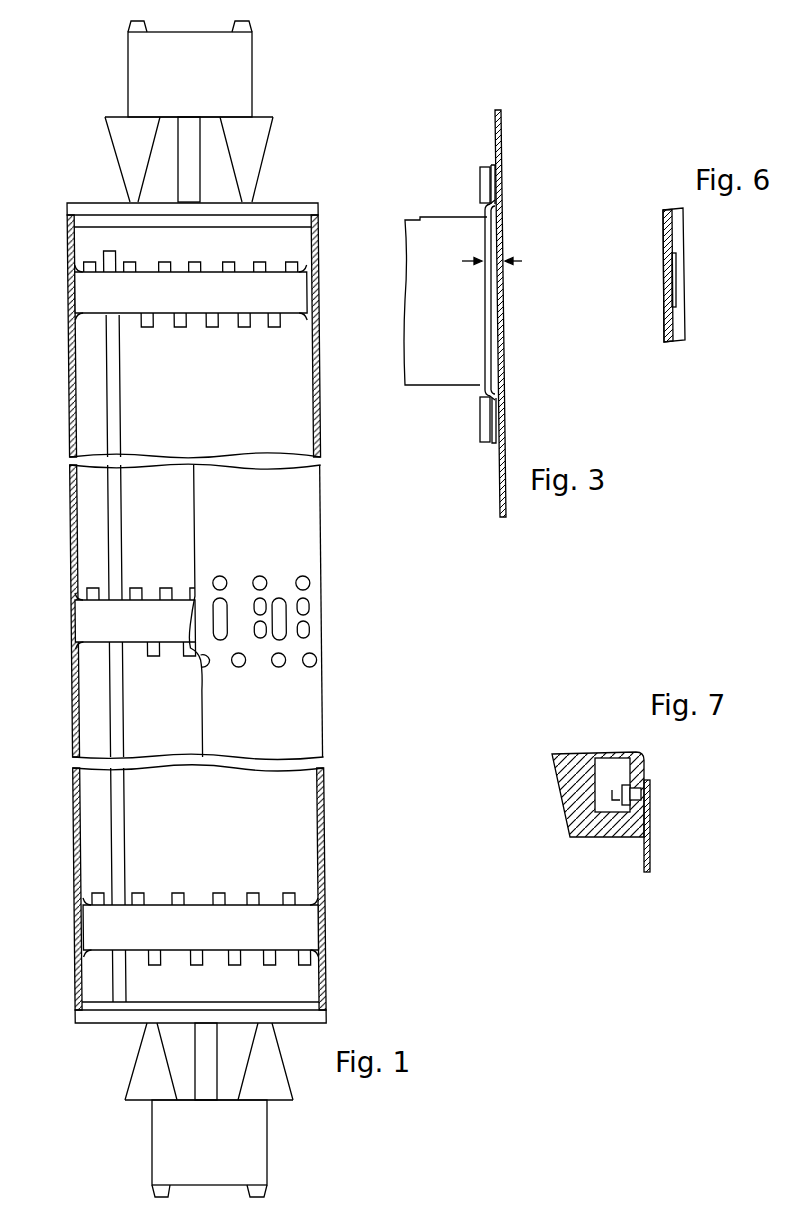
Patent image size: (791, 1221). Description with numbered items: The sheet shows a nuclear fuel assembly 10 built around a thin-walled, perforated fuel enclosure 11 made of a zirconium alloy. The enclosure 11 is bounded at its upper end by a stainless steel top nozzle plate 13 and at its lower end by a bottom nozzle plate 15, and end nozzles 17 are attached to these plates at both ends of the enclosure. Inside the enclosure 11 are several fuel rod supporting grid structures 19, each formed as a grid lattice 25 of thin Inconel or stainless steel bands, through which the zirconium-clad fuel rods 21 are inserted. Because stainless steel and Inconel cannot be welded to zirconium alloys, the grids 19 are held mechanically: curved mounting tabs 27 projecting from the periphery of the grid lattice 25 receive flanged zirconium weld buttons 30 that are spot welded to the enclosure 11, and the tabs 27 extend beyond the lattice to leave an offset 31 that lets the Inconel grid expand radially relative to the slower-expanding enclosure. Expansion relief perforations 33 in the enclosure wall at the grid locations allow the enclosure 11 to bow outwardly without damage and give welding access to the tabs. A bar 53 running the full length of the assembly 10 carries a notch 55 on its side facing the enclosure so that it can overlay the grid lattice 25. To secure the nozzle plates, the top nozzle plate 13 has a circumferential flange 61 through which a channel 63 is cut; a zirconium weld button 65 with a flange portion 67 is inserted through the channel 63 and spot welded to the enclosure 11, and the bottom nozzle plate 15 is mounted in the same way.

In FIG. 1, the nuclear fuel assembly 10 is at (42, 833).
In FIG. 1, the fuel enclosure 11 is at (325, 808).
In FIG. 3, the fuel enclosure 11 is at (501, 420).
In FIG. 7, the fuel enclosure 11 is at (643, 860).
In FIG. 1, the top nozzle plate 13 is at (92, 205).
In FIG. 7, the top nozzle plate 13 is at (583, 778).
In FIG. 1, the bottom nozzle plate 15 is at (93, 1022).
In FIG. 1, the end nozzle 17 is at (252, 65).
In FIG. 1, the fuel rod supporting grid structure 19 is at (85, 293).
In FIG. 3, the fuel rod supporting grid structure 19 is at (418, 385).
In FIG. 1, the fuel rod 21 is at (118, 697).
In FIG. 3, the grid lattice 25 is at (486, 312).
In FIG. 3, the mounting tab 27 is at (492, 165).
In FIG. 3, the weld button 30 is at (479, 182).
In FIG. 3, the offset 31 is at (509, 261).
In FIG. 1, the expansion relief perforation 33 is at (300, 632).
In FIG. 6, the bar 53 is at (676, 232).
In FIG. 6, the notch 55 is at (675, 285).
In FIG. 7, the flange 61 is at (626, 760).
In FIG. 7, the channel 63 is at (638, 803).
In FIG. 7, the weld button 65 is at (641, 778).
In FIG. 7, the flange portion 67 is at (610, 782).